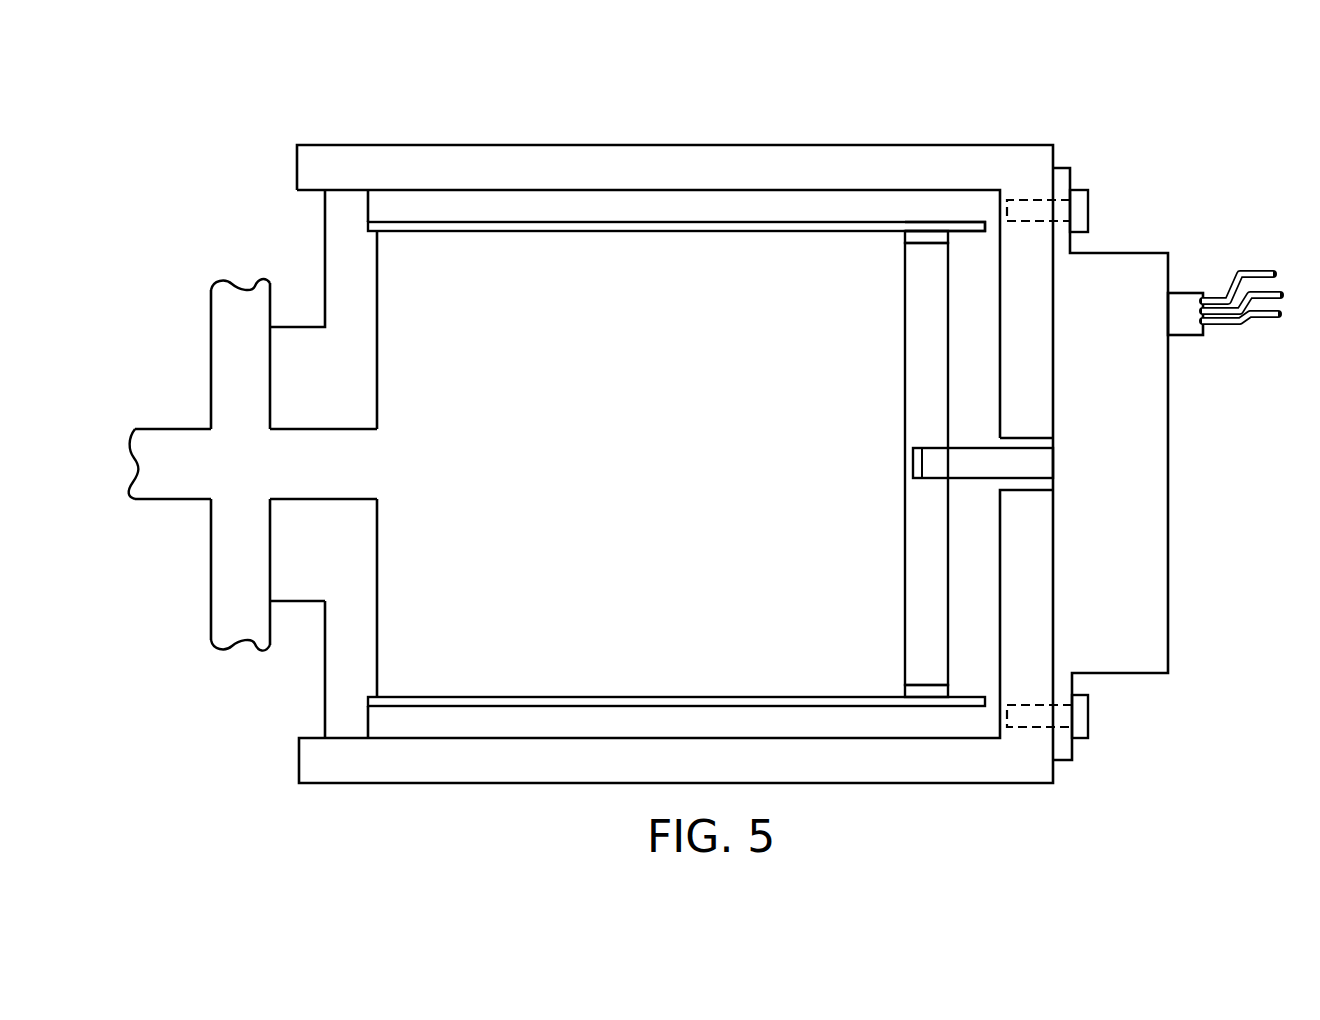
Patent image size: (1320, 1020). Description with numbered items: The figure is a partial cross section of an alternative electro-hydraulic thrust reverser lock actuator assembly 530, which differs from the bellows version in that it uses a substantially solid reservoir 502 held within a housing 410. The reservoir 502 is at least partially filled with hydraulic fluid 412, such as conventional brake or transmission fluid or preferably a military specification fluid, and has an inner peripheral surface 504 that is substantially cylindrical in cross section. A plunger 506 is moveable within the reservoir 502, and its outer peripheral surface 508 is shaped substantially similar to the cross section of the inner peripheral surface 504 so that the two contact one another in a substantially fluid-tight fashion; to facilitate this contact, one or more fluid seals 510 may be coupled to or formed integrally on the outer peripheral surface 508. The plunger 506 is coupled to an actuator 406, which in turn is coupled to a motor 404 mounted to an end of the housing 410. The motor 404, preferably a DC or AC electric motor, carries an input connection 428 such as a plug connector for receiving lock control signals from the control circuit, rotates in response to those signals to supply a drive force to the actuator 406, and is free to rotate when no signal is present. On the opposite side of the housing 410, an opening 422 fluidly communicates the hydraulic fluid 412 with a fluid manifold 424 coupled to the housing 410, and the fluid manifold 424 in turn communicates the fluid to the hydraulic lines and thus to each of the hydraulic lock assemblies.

The alternative actuator assembly 530 is at (704, 400).
The housing 410 is at (470, 146).
The reservoir 502 is at (763, 224).
The inner peripheral surface 504 is at (693, 232).
The outer peripheral surface 508 is at (928, 224).
The fluid seal 510 is at (903, 239).
The plunger 506 is at (908, 335).
The actuator 406 is at (962, 460).
The hydraulic fluid 412 is at (815, 480).
The motor 404 is at (1150, 507).
The input connection 428 is at (1185, 298).
The fluid manifold 424 is at (217, 373).
The opening 422 is at (300, 463).